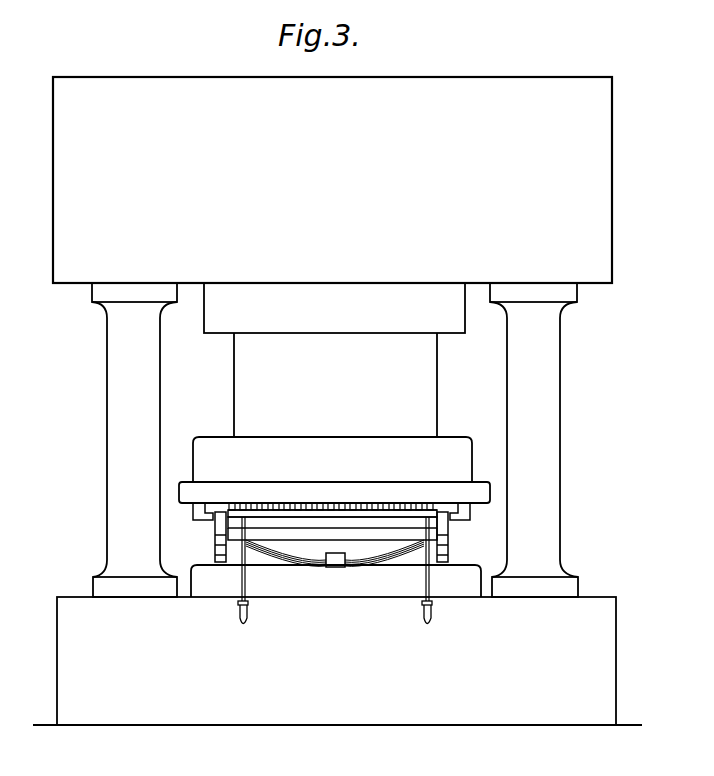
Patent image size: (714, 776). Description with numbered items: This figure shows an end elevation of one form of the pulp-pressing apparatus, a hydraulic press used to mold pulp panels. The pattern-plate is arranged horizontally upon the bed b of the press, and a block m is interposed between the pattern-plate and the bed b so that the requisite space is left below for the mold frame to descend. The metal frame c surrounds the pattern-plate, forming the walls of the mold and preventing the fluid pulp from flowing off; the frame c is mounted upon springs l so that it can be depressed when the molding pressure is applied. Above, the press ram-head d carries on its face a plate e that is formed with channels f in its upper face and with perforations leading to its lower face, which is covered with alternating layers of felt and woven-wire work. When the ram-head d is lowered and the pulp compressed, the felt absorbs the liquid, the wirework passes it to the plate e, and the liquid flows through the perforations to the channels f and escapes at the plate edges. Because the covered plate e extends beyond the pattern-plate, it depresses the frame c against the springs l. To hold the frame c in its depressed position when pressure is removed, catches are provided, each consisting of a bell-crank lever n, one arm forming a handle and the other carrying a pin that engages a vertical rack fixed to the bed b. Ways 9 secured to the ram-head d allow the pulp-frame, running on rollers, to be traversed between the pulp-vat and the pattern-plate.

The ways 9 is at (195, 513).
The press ram-head d is at (332, 459).
The channels f is at (293, 505).
The plate e is at (403, 505).
The metal frame c is at (253, 518).
The springs l is at (302, 562).
The block m is at (335, 548).
The bed b is at (336, 581).
The bell-crank lever n is at (247, 583).